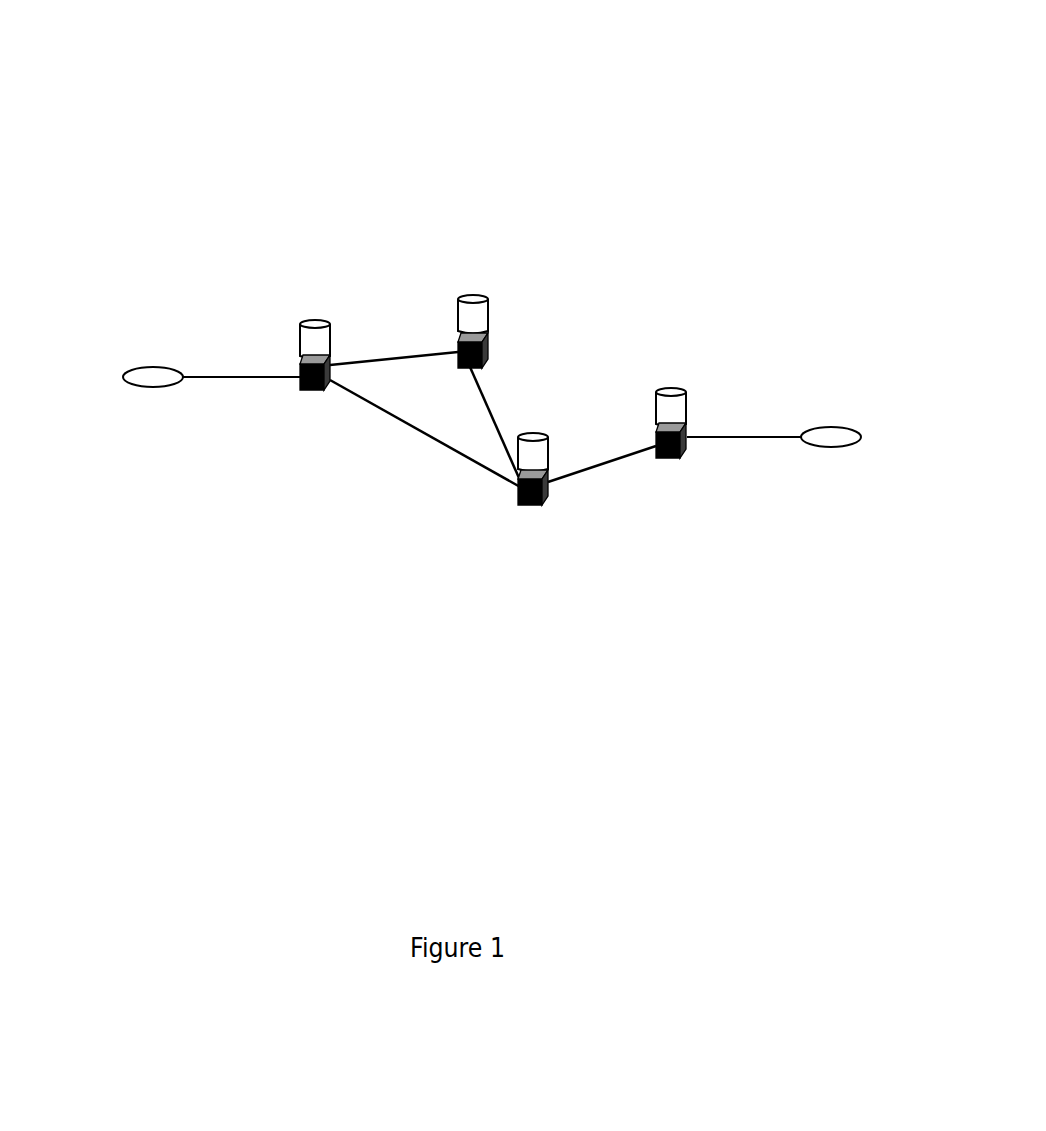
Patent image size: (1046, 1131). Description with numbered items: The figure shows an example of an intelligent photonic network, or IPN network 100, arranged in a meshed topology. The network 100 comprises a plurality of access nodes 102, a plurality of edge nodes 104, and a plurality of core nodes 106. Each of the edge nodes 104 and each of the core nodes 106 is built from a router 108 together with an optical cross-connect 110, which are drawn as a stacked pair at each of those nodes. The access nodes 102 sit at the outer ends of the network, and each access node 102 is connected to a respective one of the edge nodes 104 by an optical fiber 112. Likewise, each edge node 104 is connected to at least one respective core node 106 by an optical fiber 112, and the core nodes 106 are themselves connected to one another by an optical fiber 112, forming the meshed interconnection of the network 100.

The IPN network 100 is at (601, 79).
The access node 102 is at (153, 365).
The edge node 104 is at (315, 270).
The core node 106 is at (473, 255).
The router 108 is at (300, 340).
The optical cross-connect 110 is at (300, 362).
The optical fiber 112 is at (386, 352).